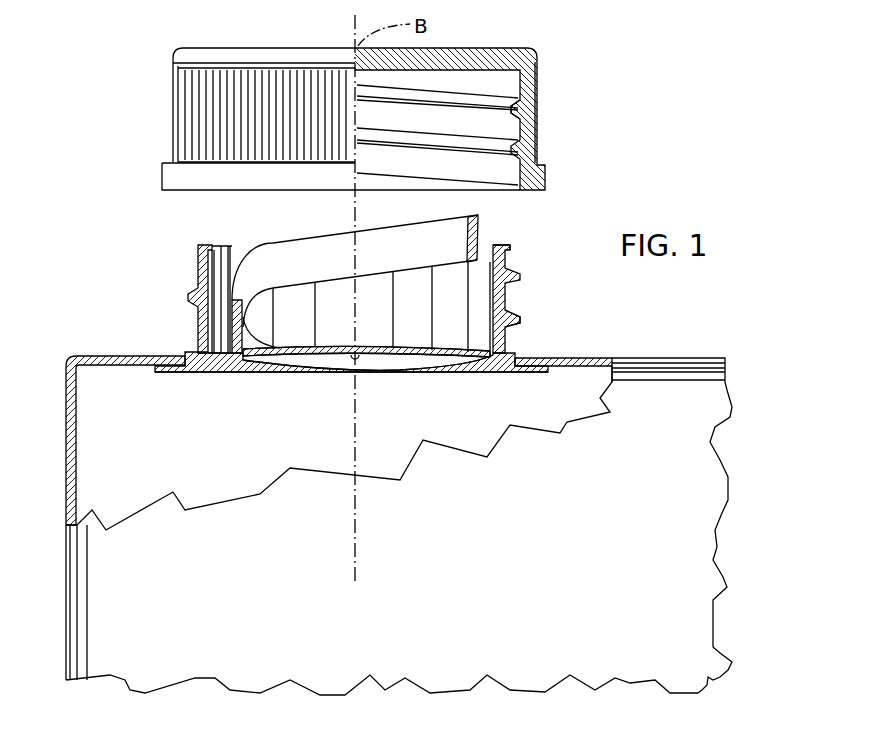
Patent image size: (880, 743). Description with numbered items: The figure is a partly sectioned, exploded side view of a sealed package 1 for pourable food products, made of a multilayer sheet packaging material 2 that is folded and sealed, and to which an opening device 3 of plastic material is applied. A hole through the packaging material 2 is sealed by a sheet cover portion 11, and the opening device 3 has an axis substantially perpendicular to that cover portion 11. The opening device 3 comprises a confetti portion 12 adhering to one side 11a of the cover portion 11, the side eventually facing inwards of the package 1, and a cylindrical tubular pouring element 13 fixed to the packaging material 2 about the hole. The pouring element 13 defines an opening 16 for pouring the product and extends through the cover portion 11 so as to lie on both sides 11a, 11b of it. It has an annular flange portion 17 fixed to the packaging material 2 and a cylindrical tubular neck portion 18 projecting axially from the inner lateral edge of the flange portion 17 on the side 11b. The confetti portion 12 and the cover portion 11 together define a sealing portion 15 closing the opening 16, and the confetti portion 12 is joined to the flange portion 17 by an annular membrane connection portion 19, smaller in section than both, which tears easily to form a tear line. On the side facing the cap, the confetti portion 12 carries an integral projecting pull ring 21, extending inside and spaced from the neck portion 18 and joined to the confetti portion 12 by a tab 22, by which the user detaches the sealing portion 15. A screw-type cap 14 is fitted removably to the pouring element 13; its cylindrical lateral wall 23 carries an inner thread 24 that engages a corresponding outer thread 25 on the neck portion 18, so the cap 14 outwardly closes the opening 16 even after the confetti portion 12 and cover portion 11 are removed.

The sealed package 1 is at (730, 340).
The multilayer sheet packaging material 2 is at (105, 355).
The opening device 3 is at (543, 289).
The cover portion 11 is at (326, 346).
The side of cover portion 11a is at (433, 366).
The side of cover portion 11b is at (393, 346).
The confetti portion 12 is at (388, 368).
The cylindrical tubular pouring element 13 is at (520, 243).
The cap 14 is at (553, 78).
The sealing portion 15 is at (330, 369).
The opening 16 is at (217, 267).
The annular flange portion 17 is at (163, 373).
The cylindrical tubular neck portion 18 is at (200, 328).
The annular membrane connection portion 19 is at (210, 373).
The pull ring 21 is at (417, 232).
The tab 22 is at (237, 328).
The cylindrical lateral wall 23 is at (530, 108).
The inner thread 24 is at (518, 107).
The outer thread 25 is at (522, 319).